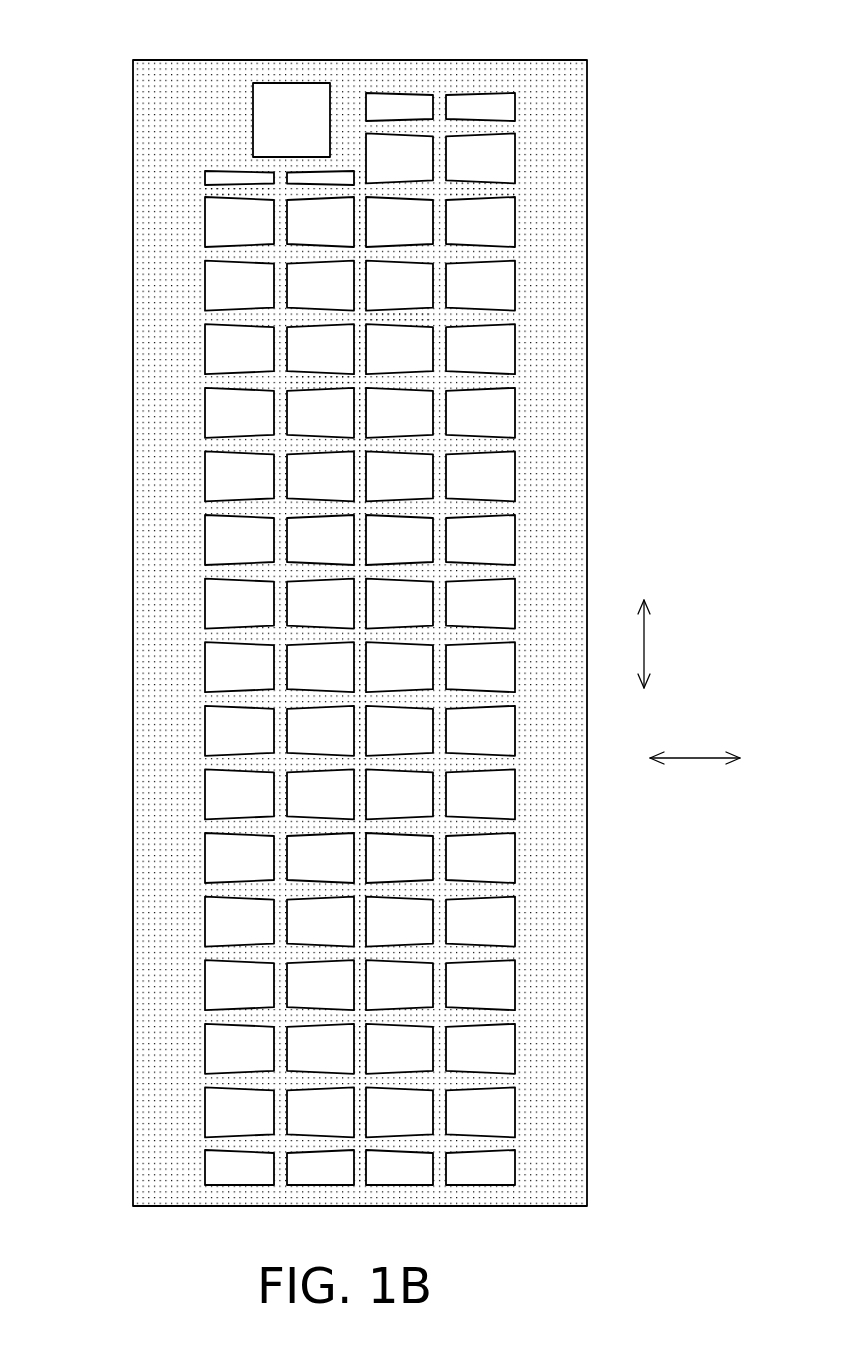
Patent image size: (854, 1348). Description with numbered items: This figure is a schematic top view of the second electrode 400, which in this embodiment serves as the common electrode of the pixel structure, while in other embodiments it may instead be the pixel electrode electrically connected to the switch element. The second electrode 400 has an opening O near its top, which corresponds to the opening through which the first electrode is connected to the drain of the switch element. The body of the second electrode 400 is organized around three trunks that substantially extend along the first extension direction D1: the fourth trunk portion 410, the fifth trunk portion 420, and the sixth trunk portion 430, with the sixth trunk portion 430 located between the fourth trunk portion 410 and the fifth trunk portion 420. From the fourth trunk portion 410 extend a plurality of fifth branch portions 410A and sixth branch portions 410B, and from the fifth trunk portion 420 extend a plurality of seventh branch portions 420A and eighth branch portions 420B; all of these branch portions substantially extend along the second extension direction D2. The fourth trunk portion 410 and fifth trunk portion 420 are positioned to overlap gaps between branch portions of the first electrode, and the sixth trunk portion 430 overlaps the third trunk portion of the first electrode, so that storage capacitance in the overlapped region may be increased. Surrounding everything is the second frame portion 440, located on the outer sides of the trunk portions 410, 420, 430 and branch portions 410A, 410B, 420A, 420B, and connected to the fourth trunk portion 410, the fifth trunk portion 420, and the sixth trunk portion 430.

The second electrode 400 is at (397, 610).
The second frame portion 440 is at (133, 143).
The opening O is at (321, 98).
The fourth trunk portion 410 is at (204, 678).
The fifth branch portions 410A is at (232, 191).
The sixth branch portions 410B is at (315, 381).
The fifth trunk portion 420 is at (517, 639).
The seventh branch portions 420A is at (407, 318).
The eighth branch portions 420B is at (487, 191).
The sixth trunk portion 430 is at (366, 286).
The first extension direction D1 is at (659, 644).
The second extension direction D2 is at (695, 739).